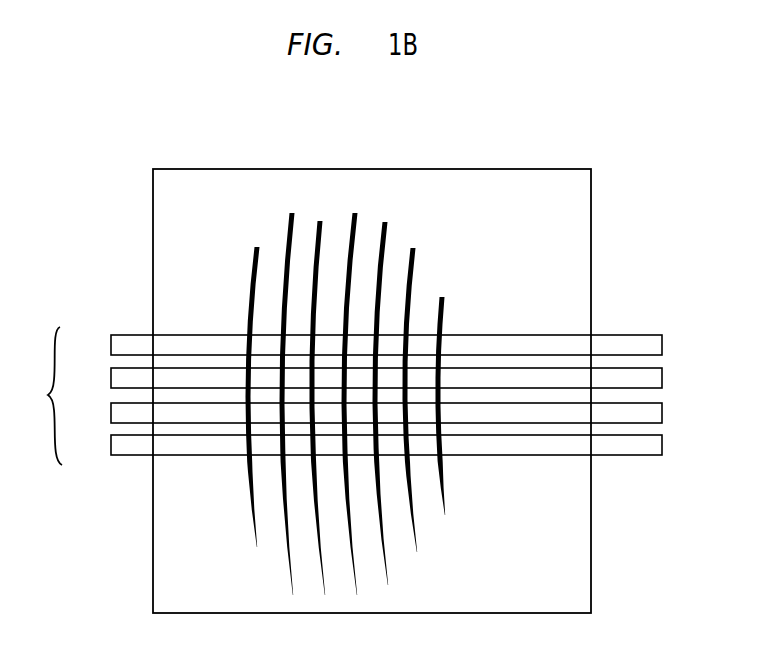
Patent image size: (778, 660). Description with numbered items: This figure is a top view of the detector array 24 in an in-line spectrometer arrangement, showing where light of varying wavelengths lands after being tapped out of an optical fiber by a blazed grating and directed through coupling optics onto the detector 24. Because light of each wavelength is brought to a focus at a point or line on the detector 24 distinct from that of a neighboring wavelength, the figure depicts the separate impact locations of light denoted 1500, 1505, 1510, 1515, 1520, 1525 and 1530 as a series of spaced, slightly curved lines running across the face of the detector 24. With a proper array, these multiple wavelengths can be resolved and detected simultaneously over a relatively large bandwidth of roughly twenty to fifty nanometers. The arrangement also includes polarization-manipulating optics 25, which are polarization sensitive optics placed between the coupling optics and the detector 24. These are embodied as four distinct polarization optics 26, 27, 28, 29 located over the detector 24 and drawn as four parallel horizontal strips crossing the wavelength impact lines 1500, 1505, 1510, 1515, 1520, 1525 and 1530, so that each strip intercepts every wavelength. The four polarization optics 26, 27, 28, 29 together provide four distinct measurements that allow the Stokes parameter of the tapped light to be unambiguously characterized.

The detector array 24 is at (593, 168).
The polarization-manipulating optics 25 is at (38, 396).
The polarization optic 26 is at (663, 334).
The polarization optic 27 is at (663, 368).
The polarization optic 28 is at (663, 403).
The polarization optic 29 is at (663, 435).
The light of a given wavelength 1500 is at (250, 278).
The light of a given wavelength 1505 is at (288, 247).
The light of a given wavelength 1510 is at (318, 222).
The light of a given wavelength 1515 is at (357, 215).
The light of a given wavelength 1520 is at (383, 247).
The light of a given wavelength 1525 is at (413, 280).
The light of a given wavelength 1530 is at (444, 310).